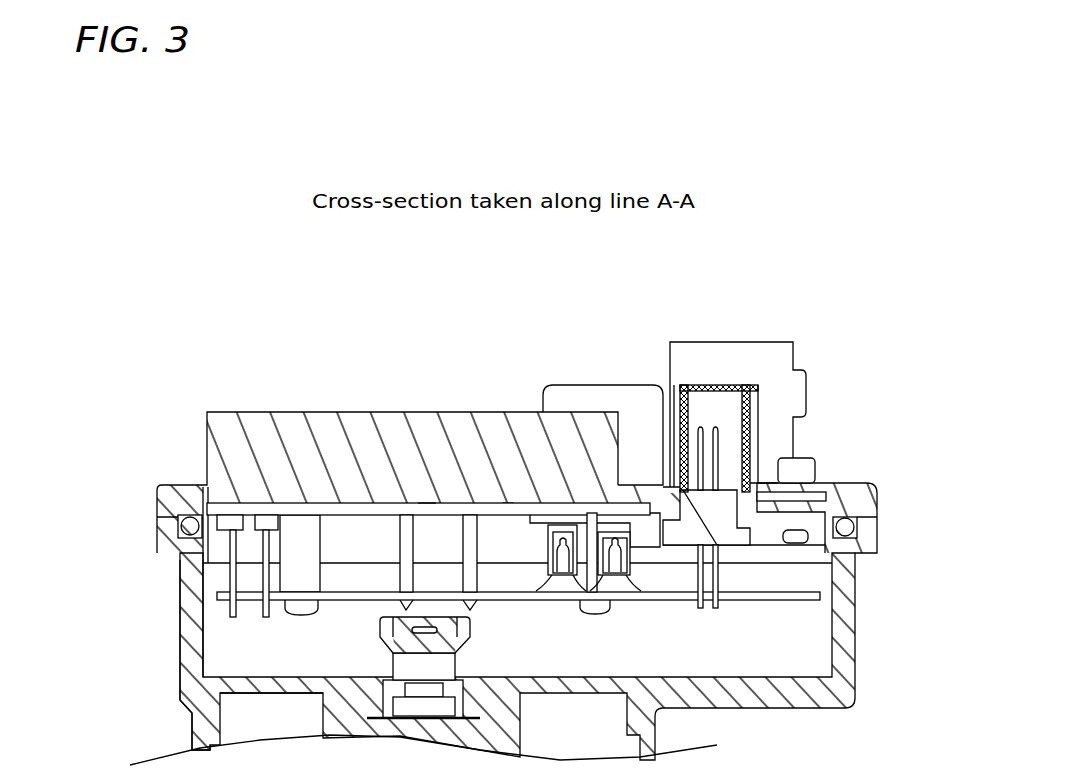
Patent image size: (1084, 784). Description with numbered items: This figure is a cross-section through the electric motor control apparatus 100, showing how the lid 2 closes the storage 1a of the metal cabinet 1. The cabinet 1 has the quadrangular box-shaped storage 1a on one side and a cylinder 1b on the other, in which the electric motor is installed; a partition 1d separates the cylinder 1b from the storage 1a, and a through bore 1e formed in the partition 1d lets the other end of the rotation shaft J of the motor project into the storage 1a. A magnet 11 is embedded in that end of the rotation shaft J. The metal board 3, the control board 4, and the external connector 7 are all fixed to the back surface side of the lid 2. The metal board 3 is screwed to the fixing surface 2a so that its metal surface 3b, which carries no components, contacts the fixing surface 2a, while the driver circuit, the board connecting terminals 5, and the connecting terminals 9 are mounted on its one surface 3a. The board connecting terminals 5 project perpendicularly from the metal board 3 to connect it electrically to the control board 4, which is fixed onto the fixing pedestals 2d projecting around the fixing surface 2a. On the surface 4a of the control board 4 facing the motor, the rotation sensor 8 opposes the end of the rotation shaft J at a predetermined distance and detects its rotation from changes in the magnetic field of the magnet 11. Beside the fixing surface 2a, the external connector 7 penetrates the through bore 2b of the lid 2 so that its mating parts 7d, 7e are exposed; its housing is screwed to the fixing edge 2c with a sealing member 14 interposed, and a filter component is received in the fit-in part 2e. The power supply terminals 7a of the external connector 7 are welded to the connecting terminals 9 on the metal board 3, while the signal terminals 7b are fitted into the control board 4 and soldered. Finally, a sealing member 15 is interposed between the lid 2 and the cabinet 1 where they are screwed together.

The electric motor control apparatus 100 is at (198, 310).
The cabinet 1 is at (160, 537).
The storage 1a is at (180, 662).
The cylinder 1b is at (192, 742).
The partition 1d is at (305, 677).
The through bore 1e is at (390, 686).
The lid 2 is at (157, 506).
The fixing surface 2a is at (508, 503).
The through bore 2b is at (736, 491).
The fixing edge 2c is at (677, 551).
The fixing pedestals 2d is at (322, 574).
The fit-in part 2e is at (598, 384).
The metal board 3 is at (372, 517).
The one surface 3a is at (428, 531).
The metal surface 3b is at (426, 503).
The control board 4 is at (768, 602).
The surface 4a is at (518, 618).
The board connecting terminals 5 is at (414, 578).
The external connector 7 is at (728, 342).
The power supply terminals 7a is at (555, 580).
The signal terminals 7b is at (700, 426).
The mating part 7d is at (742, 387).
The mating part 7e is at (753, 432).
The rotation sensor 8 is at (440, 607).
The connecting terminals 9 is at (563, 578).
The magnet 11 is at (437, 631).
The sealing member 14 is at (770, 500).
The sealing member 15 is at (190, 536).
The rotation shaft J is at (425, 707).